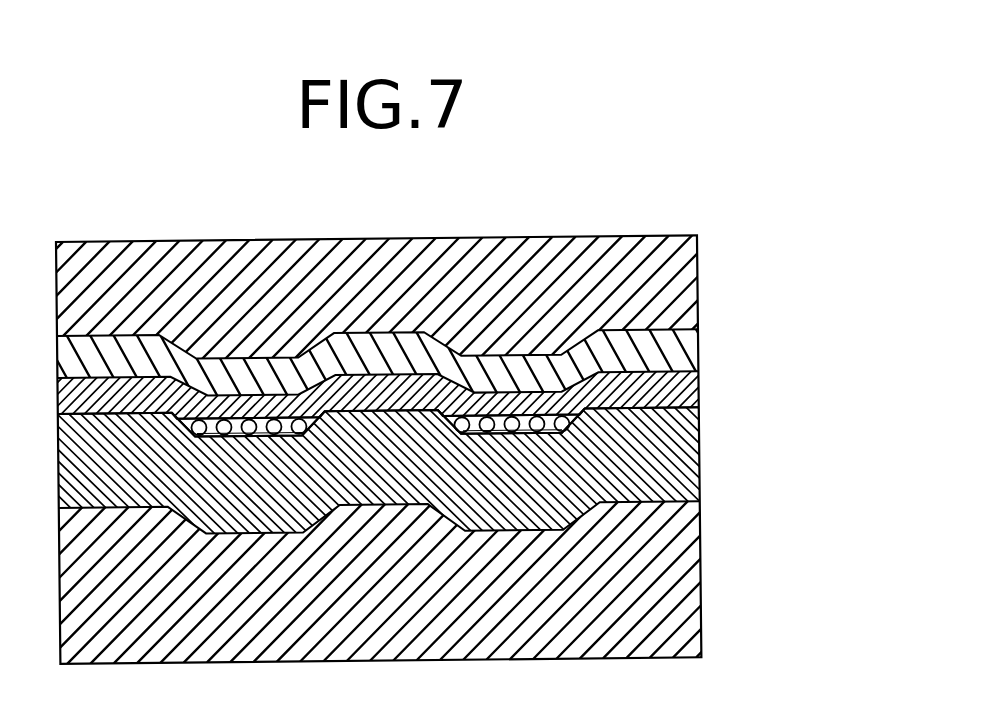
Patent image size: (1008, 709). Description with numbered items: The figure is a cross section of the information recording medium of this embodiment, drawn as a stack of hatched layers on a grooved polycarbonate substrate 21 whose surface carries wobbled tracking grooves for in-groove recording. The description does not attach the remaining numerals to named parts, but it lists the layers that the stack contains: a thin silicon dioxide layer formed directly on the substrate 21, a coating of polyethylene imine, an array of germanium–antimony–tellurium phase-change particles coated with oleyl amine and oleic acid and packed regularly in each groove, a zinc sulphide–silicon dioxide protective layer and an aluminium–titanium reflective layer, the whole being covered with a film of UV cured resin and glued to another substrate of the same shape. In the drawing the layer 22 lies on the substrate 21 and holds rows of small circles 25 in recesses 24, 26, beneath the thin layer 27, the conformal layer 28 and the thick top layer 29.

The polycarbonate substrate 21 is at (683, 601).
The lower layer 22 is at (692, 426).
The cavity bottom layer 24 is at (563, 434).
The spacer particles 25 is at (569, 428).
The cavity gap 26 is at (580, 416).
The intermediate layer 27 is at (697, 382).
The upper layer 28 is at (697, 347).
The top layer 29 is at (692, 308).